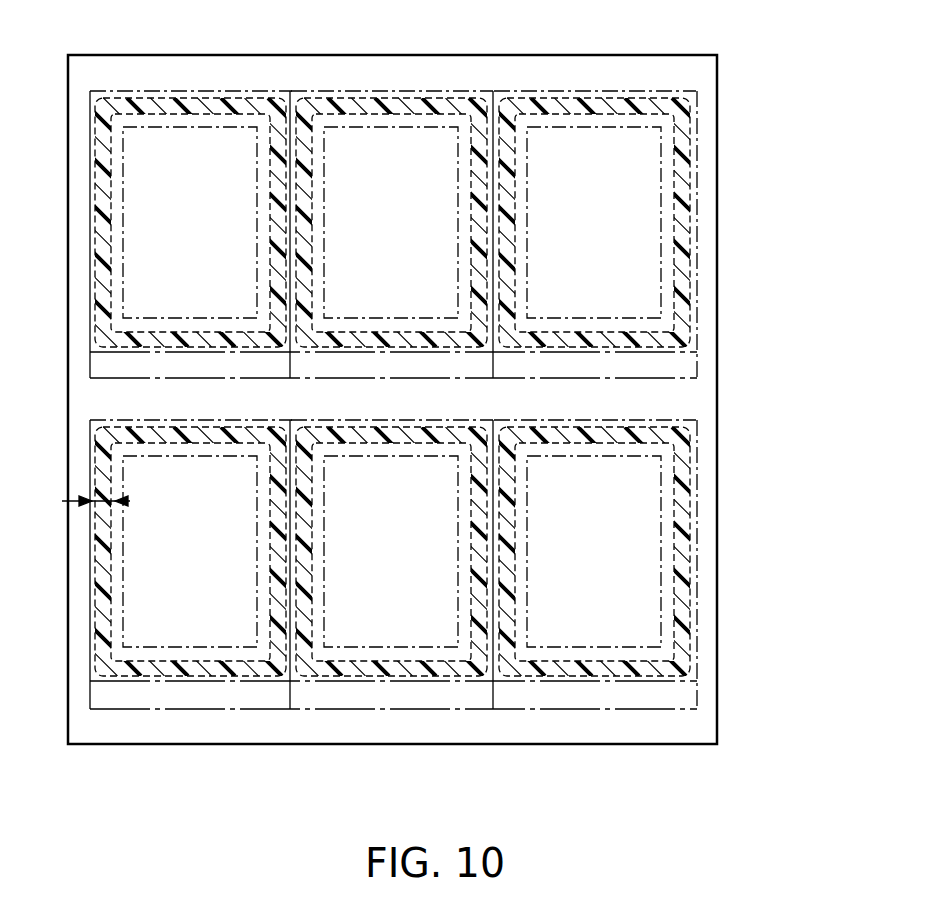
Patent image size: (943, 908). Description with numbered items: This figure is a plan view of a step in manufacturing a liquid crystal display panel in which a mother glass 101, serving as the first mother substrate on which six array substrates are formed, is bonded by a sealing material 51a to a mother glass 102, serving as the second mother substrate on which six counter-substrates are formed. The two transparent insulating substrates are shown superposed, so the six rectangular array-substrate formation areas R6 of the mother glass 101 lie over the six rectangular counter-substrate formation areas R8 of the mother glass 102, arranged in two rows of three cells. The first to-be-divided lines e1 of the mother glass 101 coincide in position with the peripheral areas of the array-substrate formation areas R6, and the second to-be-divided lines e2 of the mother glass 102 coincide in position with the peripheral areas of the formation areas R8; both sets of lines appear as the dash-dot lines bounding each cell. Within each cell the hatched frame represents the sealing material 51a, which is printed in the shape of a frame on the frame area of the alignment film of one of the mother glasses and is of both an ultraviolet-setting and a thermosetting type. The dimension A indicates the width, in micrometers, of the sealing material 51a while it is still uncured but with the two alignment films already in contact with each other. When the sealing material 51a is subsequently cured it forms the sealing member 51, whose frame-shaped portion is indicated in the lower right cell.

The mother glass 101 is at (460, 405).
The mother glass 102 is at (460, 405).
The sealing member 51 is at (595, 678).
The sealing material 51a is at (330, 97).
The counter-substrate formation area R8 is at (147, 349).
The array-substrate formation area R6 is at (216, 378).
The first to-be-divided line e1 is at (370, 709).
The second to-be-divided line e2 is at (428, 681).
The width of the sealing material A is at (80, 499).